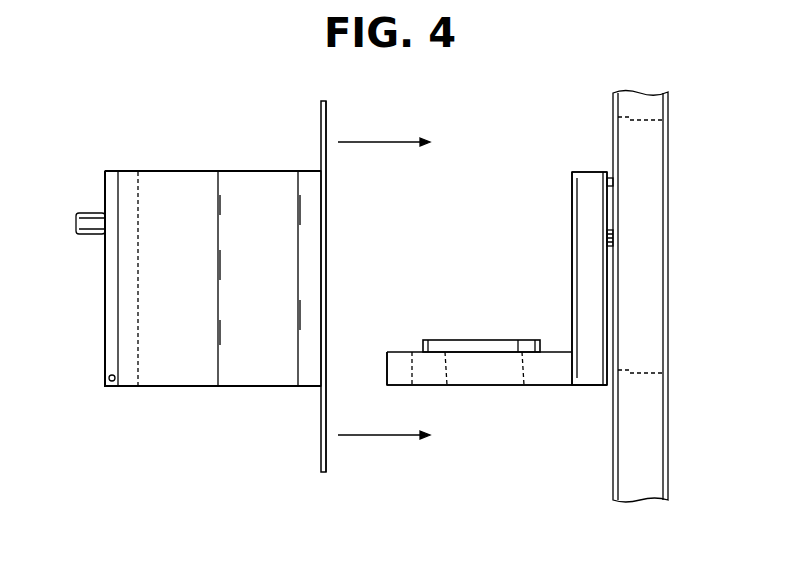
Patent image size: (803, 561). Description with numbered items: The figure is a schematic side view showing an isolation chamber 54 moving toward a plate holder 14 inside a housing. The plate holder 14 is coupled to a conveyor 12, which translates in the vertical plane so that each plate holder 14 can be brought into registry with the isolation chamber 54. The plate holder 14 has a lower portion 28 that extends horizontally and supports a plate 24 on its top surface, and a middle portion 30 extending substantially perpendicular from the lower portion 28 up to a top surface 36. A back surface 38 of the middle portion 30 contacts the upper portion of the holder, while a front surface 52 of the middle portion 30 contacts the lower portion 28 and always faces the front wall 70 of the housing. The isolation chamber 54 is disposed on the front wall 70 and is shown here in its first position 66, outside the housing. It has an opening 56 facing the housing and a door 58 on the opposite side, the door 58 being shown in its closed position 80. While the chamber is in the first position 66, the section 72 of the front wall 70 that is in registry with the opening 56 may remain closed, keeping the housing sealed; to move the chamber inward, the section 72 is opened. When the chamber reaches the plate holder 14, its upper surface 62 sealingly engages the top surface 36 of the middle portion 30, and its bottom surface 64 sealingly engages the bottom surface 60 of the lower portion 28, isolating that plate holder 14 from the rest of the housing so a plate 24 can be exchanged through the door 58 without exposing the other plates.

The conveyor 12 is at (657, 143).
The plate holder 14 is at (563, 378).
The plate 24 is at (452, 340).
The lower portion 28 is at (387, 368).
The middle portion 30 is at (572, 262).
The top surface 36 is at (585, 172).
The back surface 38 is at (605, 330).
The front surface 52 is at (572, 278).
The isolation chamber 54 is at (183, 171).
The opening 56 is at (327, 292).
The door 58 is at (105, 297).
The bottom surface 60 is at (494, 385).
The upper surface 62 is at (240, 171).
The bottom surface 64 is at (185, 386).
The first position 66 is at (154, 152).
The front wall 70 is at (327, 112).
The section 72 is at (327, 222).
The closed position 80 is at (105, 262).